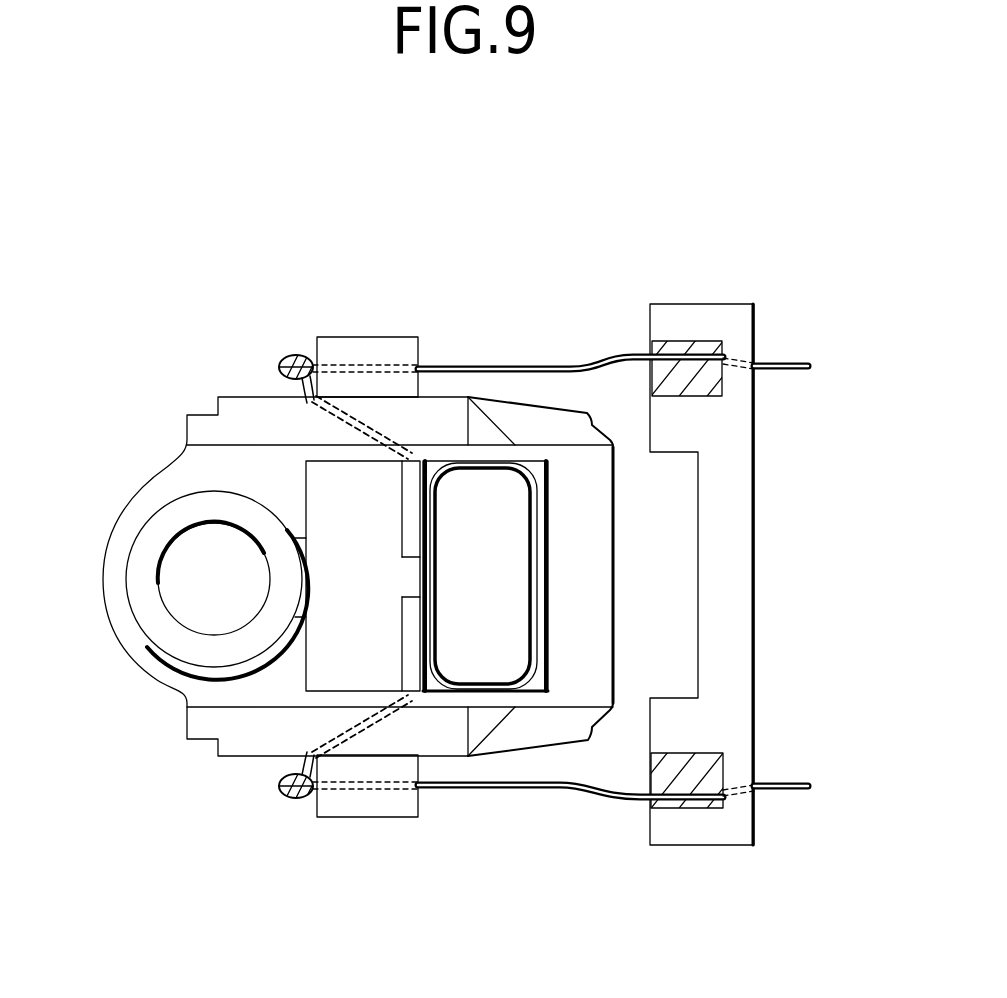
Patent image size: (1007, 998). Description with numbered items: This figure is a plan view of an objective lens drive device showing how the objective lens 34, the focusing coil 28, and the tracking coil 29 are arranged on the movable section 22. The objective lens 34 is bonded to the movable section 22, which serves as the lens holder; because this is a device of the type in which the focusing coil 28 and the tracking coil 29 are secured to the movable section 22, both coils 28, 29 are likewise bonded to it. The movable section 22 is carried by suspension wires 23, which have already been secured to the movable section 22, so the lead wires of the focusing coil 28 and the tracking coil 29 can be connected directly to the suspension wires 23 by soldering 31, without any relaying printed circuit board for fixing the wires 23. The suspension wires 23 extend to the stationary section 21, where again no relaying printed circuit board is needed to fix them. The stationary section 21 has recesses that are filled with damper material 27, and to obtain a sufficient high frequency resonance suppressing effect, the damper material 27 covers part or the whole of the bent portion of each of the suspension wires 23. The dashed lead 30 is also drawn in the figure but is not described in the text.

The stationary section 21 is at (740, 317).
The movable section 22 is at (243, 410).
The suspension wires 23 is at (473, 365).
The damper material 27 is at (713, 390).
The focusing coil 28 is at (530, 532).
The tracking coil 29 is at (412, 478).
The lead 30 is at (323, 742).
The soldering 31 is at (287, 800).
The objective lens 34 is at (172, 568).